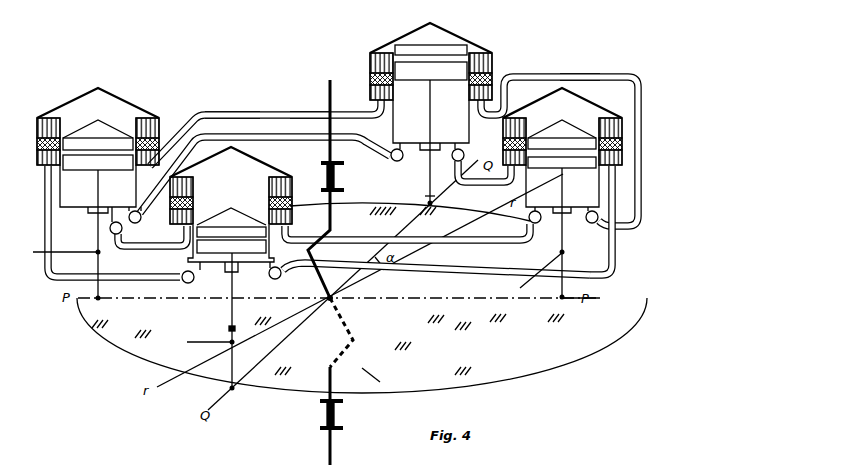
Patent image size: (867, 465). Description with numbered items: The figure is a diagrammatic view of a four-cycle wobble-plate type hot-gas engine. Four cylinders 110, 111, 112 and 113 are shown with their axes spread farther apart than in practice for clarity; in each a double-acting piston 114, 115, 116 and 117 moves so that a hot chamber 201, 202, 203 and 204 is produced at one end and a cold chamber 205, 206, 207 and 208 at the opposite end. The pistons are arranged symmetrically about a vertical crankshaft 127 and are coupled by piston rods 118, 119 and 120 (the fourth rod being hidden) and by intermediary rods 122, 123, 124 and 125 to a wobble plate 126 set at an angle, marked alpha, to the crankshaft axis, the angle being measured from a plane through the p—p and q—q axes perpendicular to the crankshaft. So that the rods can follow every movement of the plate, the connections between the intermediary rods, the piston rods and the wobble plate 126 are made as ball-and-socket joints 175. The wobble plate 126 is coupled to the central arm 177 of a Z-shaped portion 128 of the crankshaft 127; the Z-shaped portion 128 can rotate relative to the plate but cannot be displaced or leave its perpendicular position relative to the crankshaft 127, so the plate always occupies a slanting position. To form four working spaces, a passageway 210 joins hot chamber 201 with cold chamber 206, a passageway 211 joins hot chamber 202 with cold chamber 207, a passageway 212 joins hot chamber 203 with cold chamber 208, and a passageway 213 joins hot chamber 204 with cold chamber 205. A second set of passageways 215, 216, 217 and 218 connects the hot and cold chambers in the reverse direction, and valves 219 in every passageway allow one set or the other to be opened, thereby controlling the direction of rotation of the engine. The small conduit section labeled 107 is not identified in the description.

The hot chamber 201 is at (101, 187).
The hot chamber 202 is at (449, 109).
The hot chamber 203 is at (587, 178).
The hot chamber 204 is at (231, 229).
The cold chamber 205 is at (70, 191).
The cold chamber 206 is at (380, 112).
The cold chamber 207 is at (468, 240).
The cold chamber 208 is at (231, 305).
The passageway 210 is at (265, 112).
The passageway 211 is at (516, 86).
The passageway 212 is at (616, 250).
The passageway 213 is at (150, 250).
The passageway 215 is at (246, 112).
The passageway 216 is at (460, 184).
The passageway 217 is at (467, 275).
The passageway 218 is at (138, 281).
The valve 219 is at (141, 222).
The ball-and-socket joint 175 is at (282, 259).
The central arm 177 is at (334, 272).
The conduit section 107 is at (305, 111).
The cylinder 110 is at (130, 100).
The cylinder 111 is at (490, 62).
The cylinder 112 is at (588, 77).
The cylinder 113 is at (254, 172).
The double-acting piston 114 is at (103, 140).
The double-acting piston 115 is at (450, 47).
The double-acting piston 116 is at (570, 130).
The double-acting piston 117 is at (322, 170).
The piston rod 118 is at (97, 239).
The piston rod 119 is at (433, 125).
The piston rod 120 is at (563, 190).
The intermediary rod 122 is at (74, 282).
The intermediary rod 123 is at (428, 193).
The intermediary rod 124 is at (229, 328).
The intermediary rod 125 is at (232, 356).
The wobble plate 126 is at (372, 378).
The crankshaft 127 is at (598, 298).
The Z-shaped portion 128 is at (336, 446).